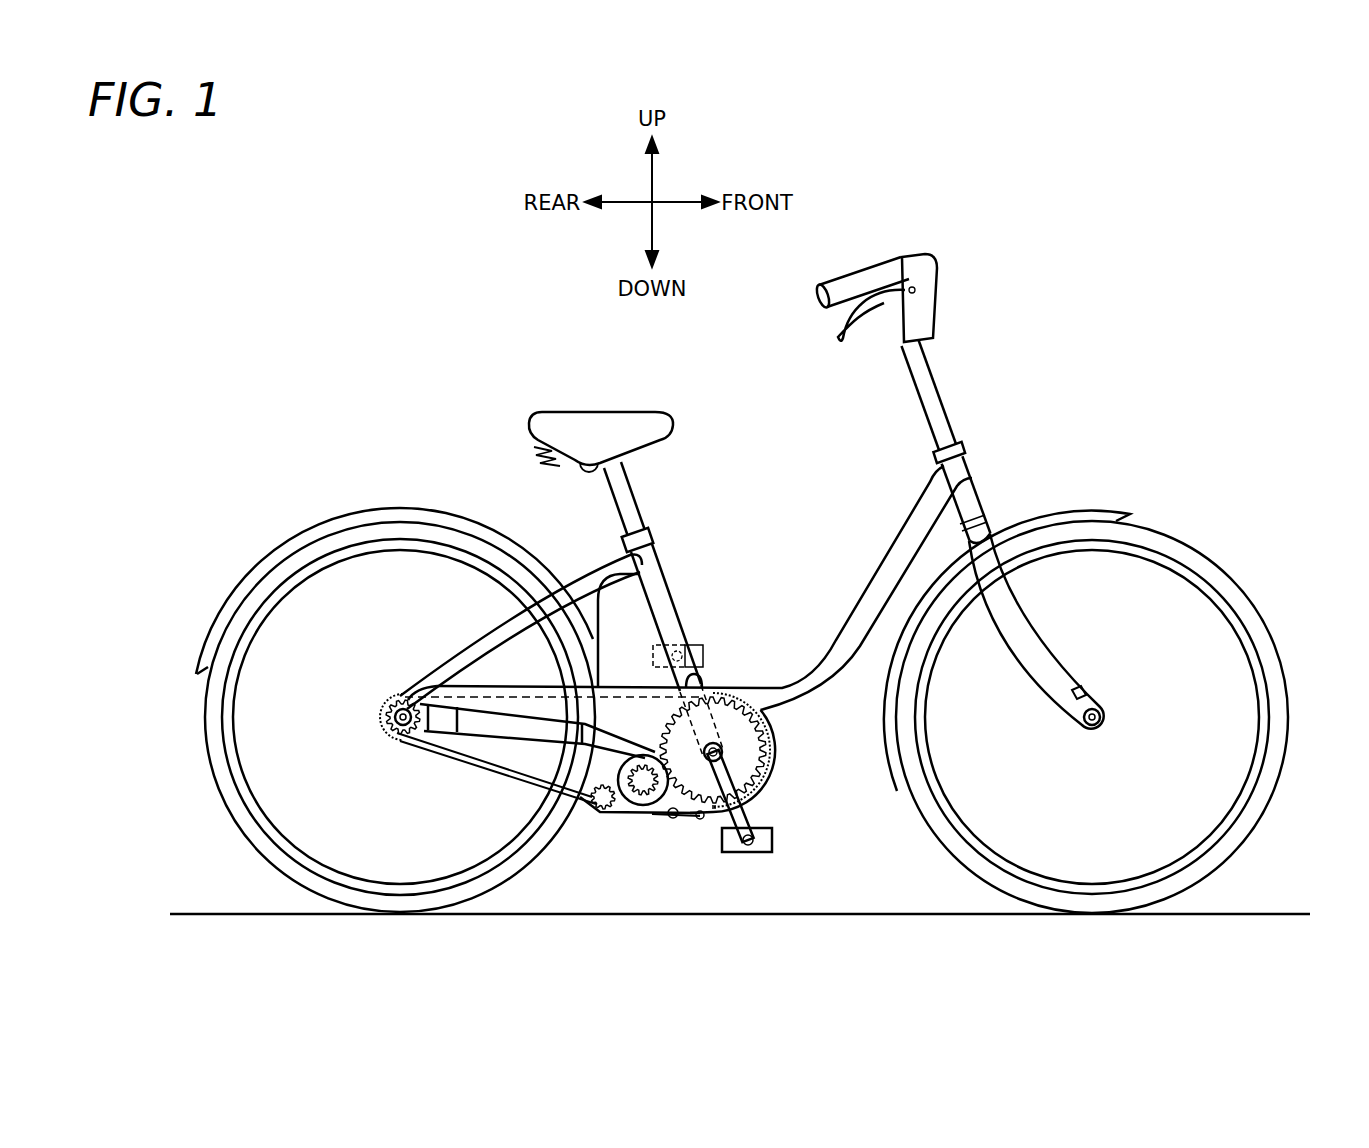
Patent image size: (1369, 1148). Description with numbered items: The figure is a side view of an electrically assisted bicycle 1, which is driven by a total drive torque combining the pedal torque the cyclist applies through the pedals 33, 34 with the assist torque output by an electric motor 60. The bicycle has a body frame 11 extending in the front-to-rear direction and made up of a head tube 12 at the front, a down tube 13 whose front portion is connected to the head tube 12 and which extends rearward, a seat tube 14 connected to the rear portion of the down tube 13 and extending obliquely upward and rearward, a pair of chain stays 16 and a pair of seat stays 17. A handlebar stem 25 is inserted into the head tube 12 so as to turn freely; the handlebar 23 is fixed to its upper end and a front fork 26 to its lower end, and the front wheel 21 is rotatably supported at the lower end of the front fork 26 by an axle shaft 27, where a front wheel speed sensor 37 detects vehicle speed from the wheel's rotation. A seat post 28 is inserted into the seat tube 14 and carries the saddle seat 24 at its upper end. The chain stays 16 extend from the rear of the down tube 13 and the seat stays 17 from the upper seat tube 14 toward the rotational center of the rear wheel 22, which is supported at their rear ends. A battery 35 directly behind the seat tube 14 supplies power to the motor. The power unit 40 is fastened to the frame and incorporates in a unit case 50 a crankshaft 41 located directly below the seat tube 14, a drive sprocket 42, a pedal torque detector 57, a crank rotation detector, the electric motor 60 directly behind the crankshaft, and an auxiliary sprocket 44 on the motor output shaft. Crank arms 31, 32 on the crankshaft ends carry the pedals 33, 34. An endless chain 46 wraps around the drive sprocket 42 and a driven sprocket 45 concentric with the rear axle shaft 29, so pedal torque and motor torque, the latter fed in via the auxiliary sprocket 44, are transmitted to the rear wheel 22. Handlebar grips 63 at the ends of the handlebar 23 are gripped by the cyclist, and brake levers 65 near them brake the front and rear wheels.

The electrically assisted bicycle 1 is at (492, 380).
The body frame 11 is at (838, 558).
The head tube 12 is at (963, 473).
The down tube 13 is at (900, 542).
The seat tube 14 is at (656, 586).
The chain stays 16 is at (524, 735).
The seat stays 17 is at (472, 654).
The front wheel 21 is at (1195, 565).
The rear wheel 22 is at (212, 717).
The handlebar 23 is at (932, 280).
The saddle seat 24 is at (614, 420).
The handlebar stem 25 is at (930, 398).
The front fork 26 is at (1010, 625).
The axle shaft 27 is at (1103, 712).
The seat post 28 is at (628, 512).
The rear axle shaft 29 is at (401, 727).
The crank arm 31 is at (746, 820).
The crank arm 32 is at (702, 679).
The pedal 33 is at (773, 841).
The pedal 34 is at (703, 653).
The battery 35 is at (640, 617).
The front wheel speed sensor 37 is at (1080, 690).
The power unit 40 is at (812, 797).
The crankshaft 41 is at (722, 752).
The drive sprocket 42 is at (658, 742).
The auxiliary sprocket 44 is at (640, 804).
The driven sprocket 45 is at (418, 748).
The chain 46 is at (465, 767).
The unit case 50 is at (790, 731).
The pedal torque detector 57 is at (712, 808).
The electric motor 60 is at (658, 818).
The handlebar grips 63 is at (848, 284).
The brake levers 65 is at (868, 318).